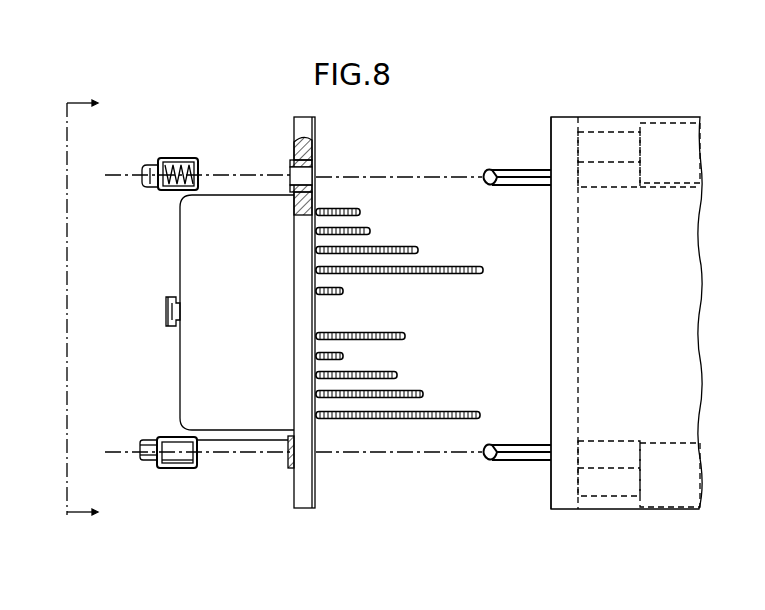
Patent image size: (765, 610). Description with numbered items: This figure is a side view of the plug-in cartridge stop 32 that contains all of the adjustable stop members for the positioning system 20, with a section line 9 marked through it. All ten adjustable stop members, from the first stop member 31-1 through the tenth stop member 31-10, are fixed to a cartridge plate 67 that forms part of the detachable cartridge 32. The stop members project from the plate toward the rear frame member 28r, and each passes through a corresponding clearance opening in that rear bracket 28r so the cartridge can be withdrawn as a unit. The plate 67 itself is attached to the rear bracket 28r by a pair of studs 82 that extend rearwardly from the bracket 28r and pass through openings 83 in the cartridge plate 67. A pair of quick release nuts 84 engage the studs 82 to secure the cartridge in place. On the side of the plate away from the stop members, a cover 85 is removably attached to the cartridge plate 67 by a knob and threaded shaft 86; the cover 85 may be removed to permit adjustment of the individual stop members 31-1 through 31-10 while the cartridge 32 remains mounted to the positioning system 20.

The section line 9- 9 is at (73, 308).
The positioning system 20 is at (625, 512).
The rear frame member 28r is at (562, 498).
The adjustable stop member 31-1 is at (342, 207).
The adjustable stop member 31-10 is at (380, 420).
The detachable cartridge 32 is at (176, 390).
The cartridge plate 67 is at (300, 500).
The studs 82 is at (525, 176).
The openings 83 is at (312, 170).
The quick release nuts 84 is at (155, 160).
The cover 85 is at (200, 238).
The knob and threaded shaft 86 is at (163, 308).